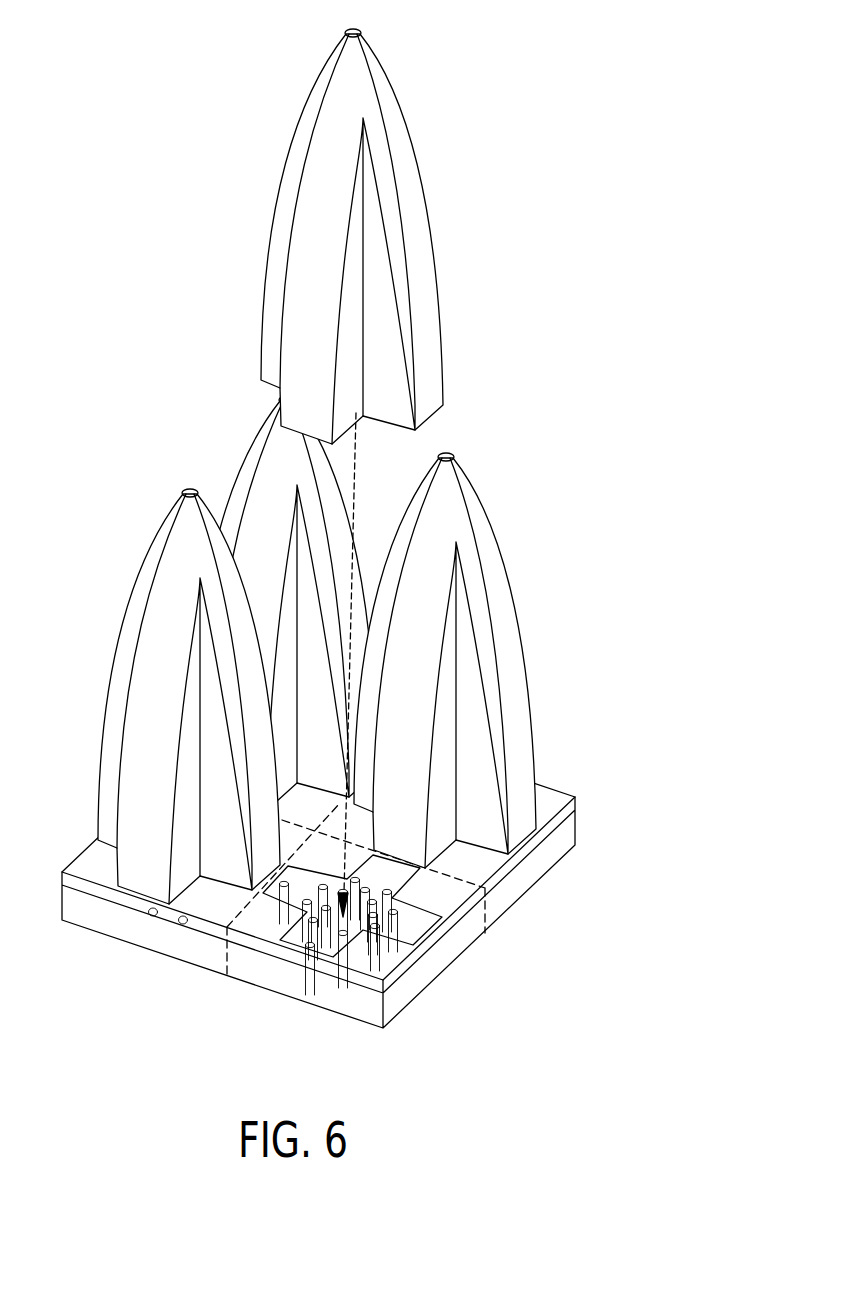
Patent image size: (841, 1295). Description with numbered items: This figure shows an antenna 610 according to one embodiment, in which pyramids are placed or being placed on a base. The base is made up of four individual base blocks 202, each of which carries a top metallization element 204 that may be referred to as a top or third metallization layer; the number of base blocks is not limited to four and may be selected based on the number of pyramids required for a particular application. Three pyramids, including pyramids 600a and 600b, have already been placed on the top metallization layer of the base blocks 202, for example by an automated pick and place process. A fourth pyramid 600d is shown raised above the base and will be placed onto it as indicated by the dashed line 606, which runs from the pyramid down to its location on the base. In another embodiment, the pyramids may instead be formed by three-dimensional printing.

The base block 202 is at (552, 853).
The top metallization element 204 is at (340, 946).
The pyramid 600a is at (528, 662).
The pyramid 600b is at (247, 450).
The pyramid 600d is at (428, 280).
The dashed line 606 is at (358, 458).
The antenna 610 is at (372, 878).